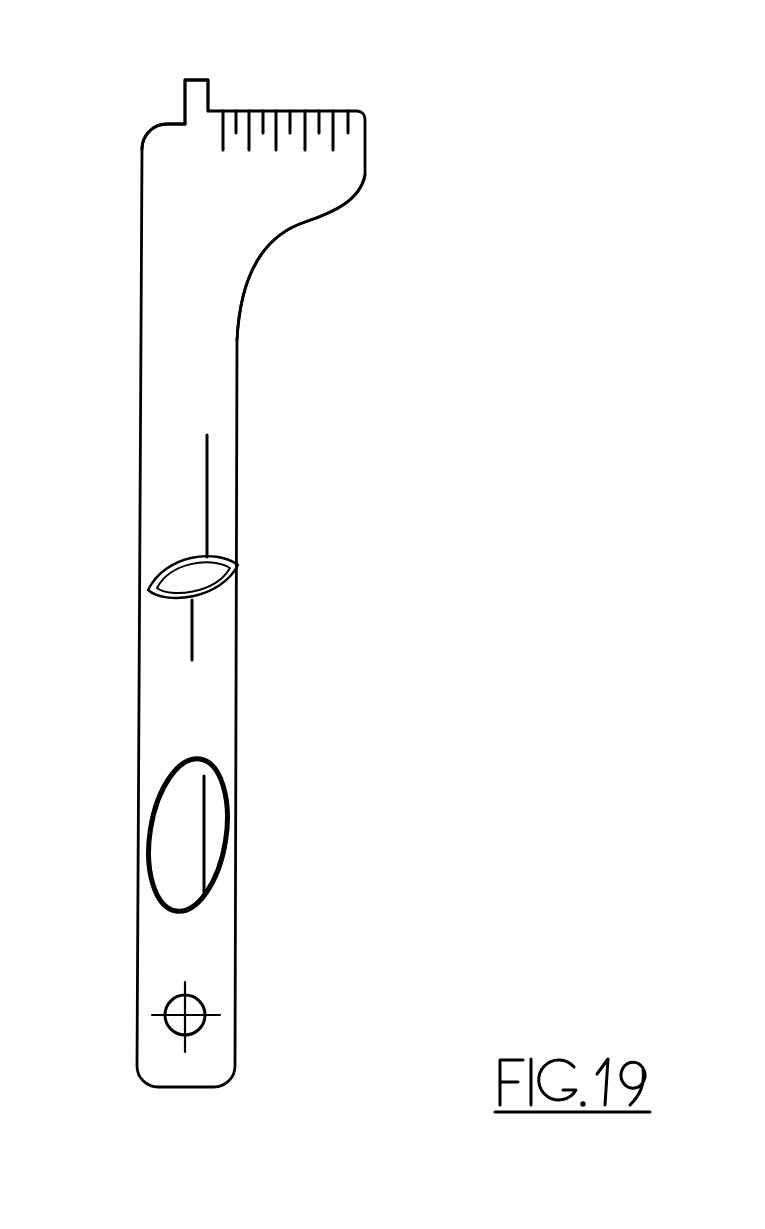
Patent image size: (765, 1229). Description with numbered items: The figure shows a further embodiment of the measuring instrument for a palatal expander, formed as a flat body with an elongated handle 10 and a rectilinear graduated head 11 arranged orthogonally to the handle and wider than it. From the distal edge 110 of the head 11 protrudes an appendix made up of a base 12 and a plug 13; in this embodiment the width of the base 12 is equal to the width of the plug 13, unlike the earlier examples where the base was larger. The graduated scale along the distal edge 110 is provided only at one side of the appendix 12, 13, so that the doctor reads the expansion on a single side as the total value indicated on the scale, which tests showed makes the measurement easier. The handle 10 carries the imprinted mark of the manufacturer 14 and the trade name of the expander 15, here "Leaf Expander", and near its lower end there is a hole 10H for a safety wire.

The handle 10 is at (237, 664).
The hole 10H is at (206, 1003).
The graduated head 11 is at (259, 197).
The base 12 is at (200, 120).
The plug 13 is at (206, 90).
The mark of the manufacturer 14 is at (168, 908).
The trade name of the expander 15 is at (168, 535).
The distal edge 110 is at (325, 111).